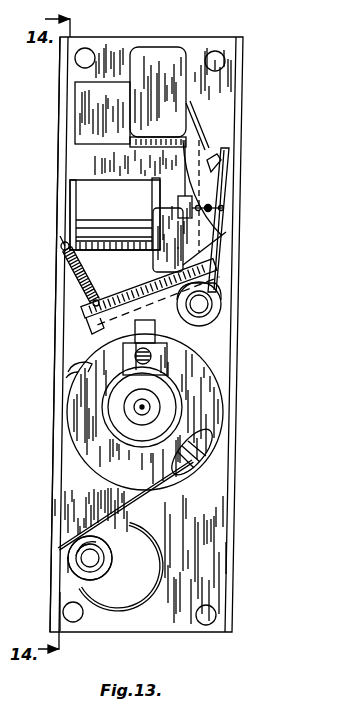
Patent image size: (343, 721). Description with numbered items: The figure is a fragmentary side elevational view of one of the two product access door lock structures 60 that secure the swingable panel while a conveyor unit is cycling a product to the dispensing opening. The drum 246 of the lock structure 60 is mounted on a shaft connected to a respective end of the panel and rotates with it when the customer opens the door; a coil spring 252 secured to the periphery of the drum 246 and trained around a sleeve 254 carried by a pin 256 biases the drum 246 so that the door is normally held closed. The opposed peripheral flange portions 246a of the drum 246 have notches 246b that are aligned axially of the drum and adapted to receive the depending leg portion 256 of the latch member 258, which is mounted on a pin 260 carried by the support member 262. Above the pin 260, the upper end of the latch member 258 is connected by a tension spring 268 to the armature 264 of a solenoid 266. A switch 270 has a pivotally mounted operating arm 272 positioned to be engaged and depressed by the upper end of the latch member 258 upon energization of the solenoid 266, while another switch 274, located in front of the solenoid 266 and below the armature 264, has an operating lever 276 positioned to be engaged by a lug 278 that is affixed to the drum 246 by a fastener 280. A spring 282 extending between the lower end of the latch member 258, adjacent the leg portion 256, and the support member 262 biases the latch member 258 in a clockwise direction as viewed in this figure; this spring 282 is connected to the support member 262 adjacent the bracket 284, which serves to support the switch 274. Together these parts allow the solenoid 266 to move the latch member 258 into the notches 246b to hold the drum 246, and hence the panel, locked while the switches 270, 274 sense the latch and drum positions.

The lock structure 60 is at (50, 483).
The drum 246 is at (222, 432).
The peripheral flange portion 246a is at (74, 372).
The notch 246b is at (90, 368).
The coil spring 252 is at (123, 500).
The sleeve 254 is at (72, 546).
The pin / depending leg portion 256 is at (85, 323).
The latch member 258 is at (228, 246).
The pin 260 is at (215, 306).
The support member 262 is at (214, 527).
The armature 264 is at (178, 198).
The solenoid 266 is at (112, 185).
The tension spring 268 is at (226, 204).
The switch 270 is at (153, 55).
The operating arm 272 is at (218, 124).
The switch 274 is at (152, 226).
The operating lever 276 is at (153, 258).
The lug 278 is at (158, 347).
The fastener 280 is at (114, 396).
The spring 282 is at (68, 290).
The bracket 284 is at (62, 243).